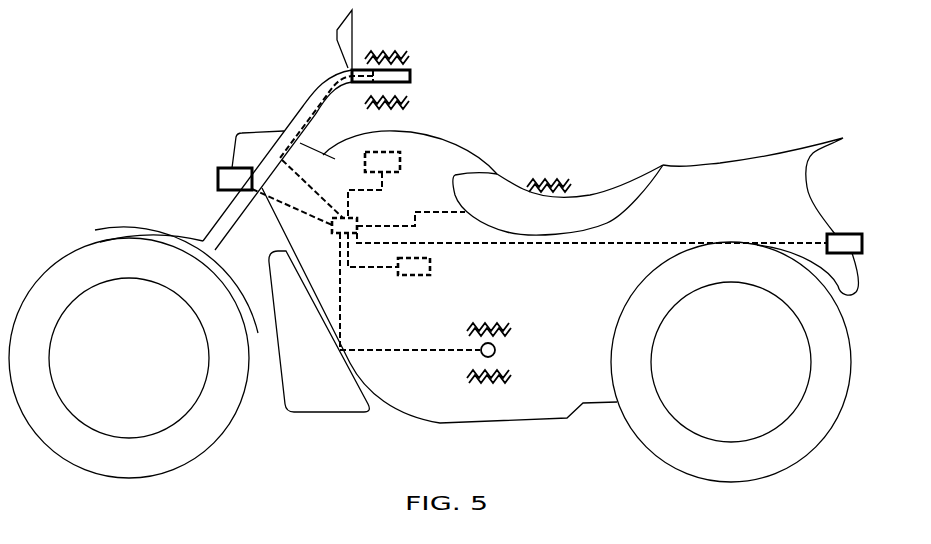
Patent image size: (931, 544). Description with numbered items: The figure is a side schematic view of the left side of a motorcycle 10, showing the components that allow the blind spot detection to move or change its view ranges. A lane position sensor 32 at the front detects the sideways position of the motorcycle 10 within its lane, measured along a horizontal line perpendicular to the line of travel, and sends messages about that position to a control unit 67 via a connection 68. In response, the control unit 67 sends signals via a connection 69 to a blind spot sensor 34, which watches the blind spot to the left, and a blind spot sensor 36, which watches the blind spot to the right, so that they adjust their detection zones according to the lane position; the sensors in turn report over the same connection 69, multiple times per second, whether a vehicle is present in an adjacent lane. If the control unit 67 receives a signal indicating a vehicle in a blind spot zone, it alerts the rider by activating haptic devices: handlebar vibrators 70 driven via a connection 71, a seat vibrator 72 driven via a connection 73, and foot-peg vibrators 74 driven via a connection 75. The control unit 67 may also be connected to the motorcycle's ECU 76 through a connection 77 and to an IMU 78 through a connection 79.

The motorcycle 10 is at (152, 78).
The lane position sensor 32 is at (217, 178).
The blind spot sensor 34 is at (858, 253).
The blind spot sensor 36 is at (853, 233).
The control unit 67 is at (358, 227).
The connection 68 is at (310, 216).
The connection 69 is at (453, 245).
The handlebar vibrators 70 is at (410, 70).
The connection 71 is at (318, 100).
The seat vibrator 72 is at (615, 188).
The connection 73 is at (438, 210).
The foot-peg vibrators 74 is at (495, 349).
The connection 75 is at (392, 352).
The ECU 76 is at (413, 275).
The connection 77 is at (357, 267).
The IMU 78 is at (400, 163).
The connection 79 is at (362, 188).